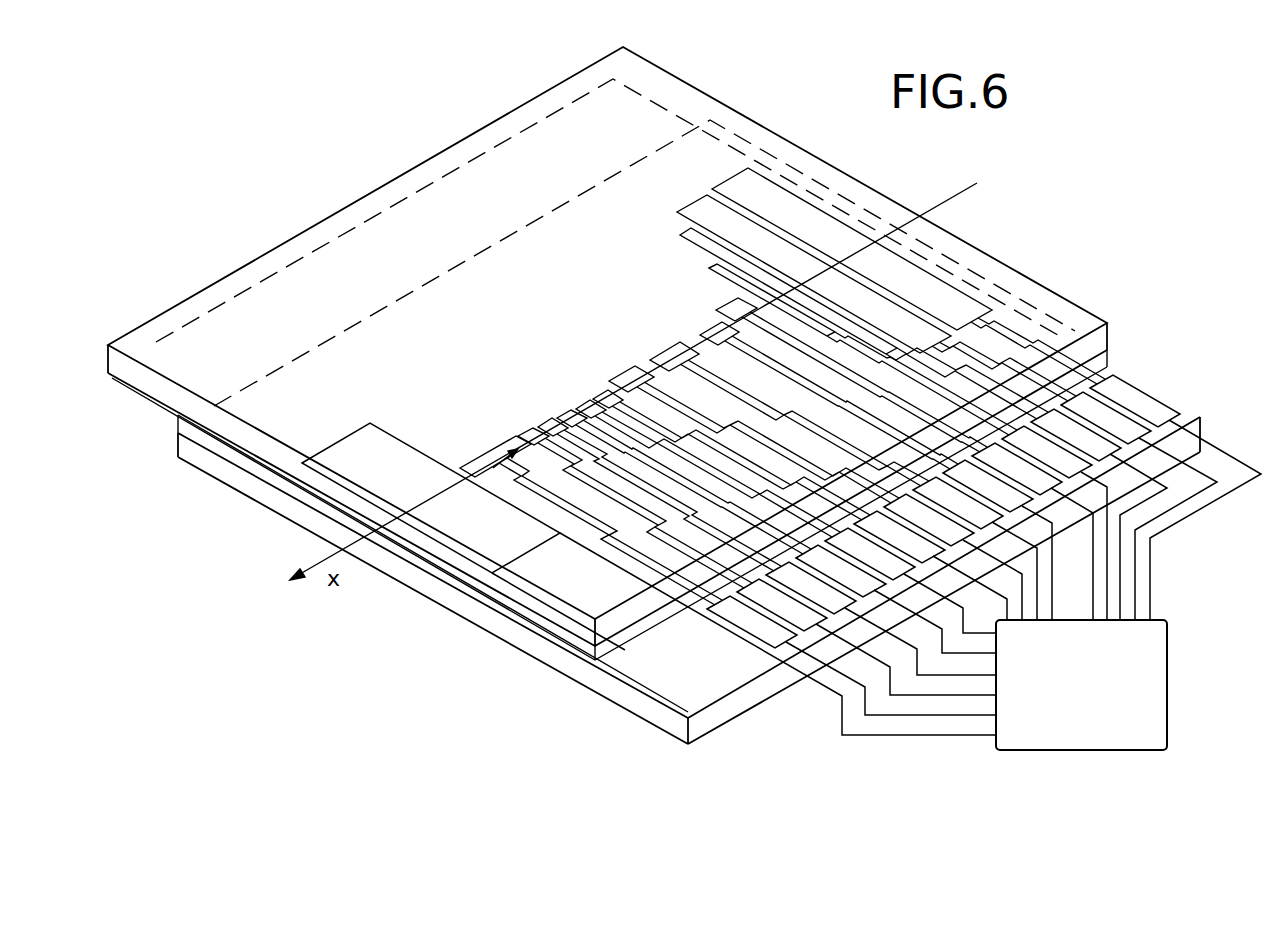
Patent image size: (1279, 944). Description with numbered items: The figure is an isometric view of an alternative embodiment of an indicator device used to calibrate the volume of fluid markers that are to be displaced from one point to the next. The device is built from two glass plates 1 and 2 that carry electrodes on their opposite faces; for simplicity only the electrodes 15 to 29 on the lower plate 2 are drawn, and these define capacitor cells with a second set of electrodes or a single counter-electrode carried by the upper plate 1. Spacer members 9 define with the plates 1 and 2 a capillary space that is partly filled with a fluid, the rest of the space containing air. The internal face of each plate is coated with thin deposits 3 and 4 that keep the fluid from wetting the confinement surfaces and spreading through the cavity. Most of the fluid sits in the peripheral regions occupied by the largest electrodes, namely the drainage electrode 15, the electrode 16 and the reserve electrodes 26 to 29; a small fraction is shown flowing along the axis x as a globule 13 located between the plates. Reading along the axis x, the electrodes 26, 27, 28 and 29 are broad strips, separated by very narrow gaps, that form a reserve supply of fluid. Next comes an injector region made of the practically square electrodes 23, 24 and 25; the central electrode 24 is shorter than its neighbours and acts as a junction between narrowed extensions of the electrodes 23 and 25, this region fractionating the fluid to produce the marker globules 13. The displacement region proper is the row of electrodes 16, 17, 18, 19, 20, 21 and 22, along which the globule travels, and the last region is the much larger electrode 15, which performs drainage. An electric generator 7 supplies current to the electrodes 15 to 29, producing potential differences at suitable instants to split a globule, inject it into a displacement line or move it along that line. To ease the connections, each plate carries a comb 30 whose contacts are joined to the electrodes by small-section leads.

The glass plate 1 is at (1028, 290).
The glass plate 2 is at (1187, 447).
The thin deposit 3 is at (127, 387).
The thin deposit 4 is at (1188, 417).
The electric generator 7 is at (1163, 680).
The spacer members 9 is at (177, 426).
The globule 13 is at (495, 483).
The electrode 15 is at (350, 447).
The electrode 16 is at (485, 452).
The electrode 17 is at (538, 443).
The electrode 18 is at (538, 432).
The electrode 19 is at (556, 418).
The electrode 20 is at (577, 407).
The electrode 21 is at (596, 397).
The electrode 22 is at (626, 378).
The electrode 23 is at (660, 356).
The central electrode 24 is at (703, 334).
The electrode 25 is at (718, 309).
The electrode 26 is at (710, 267).
The electrode 27 is at (680, 235).
The electrode 28 is at (693, 206).
The electrode 29 is at (733, 182).
The comb 30 is at (708, 636).